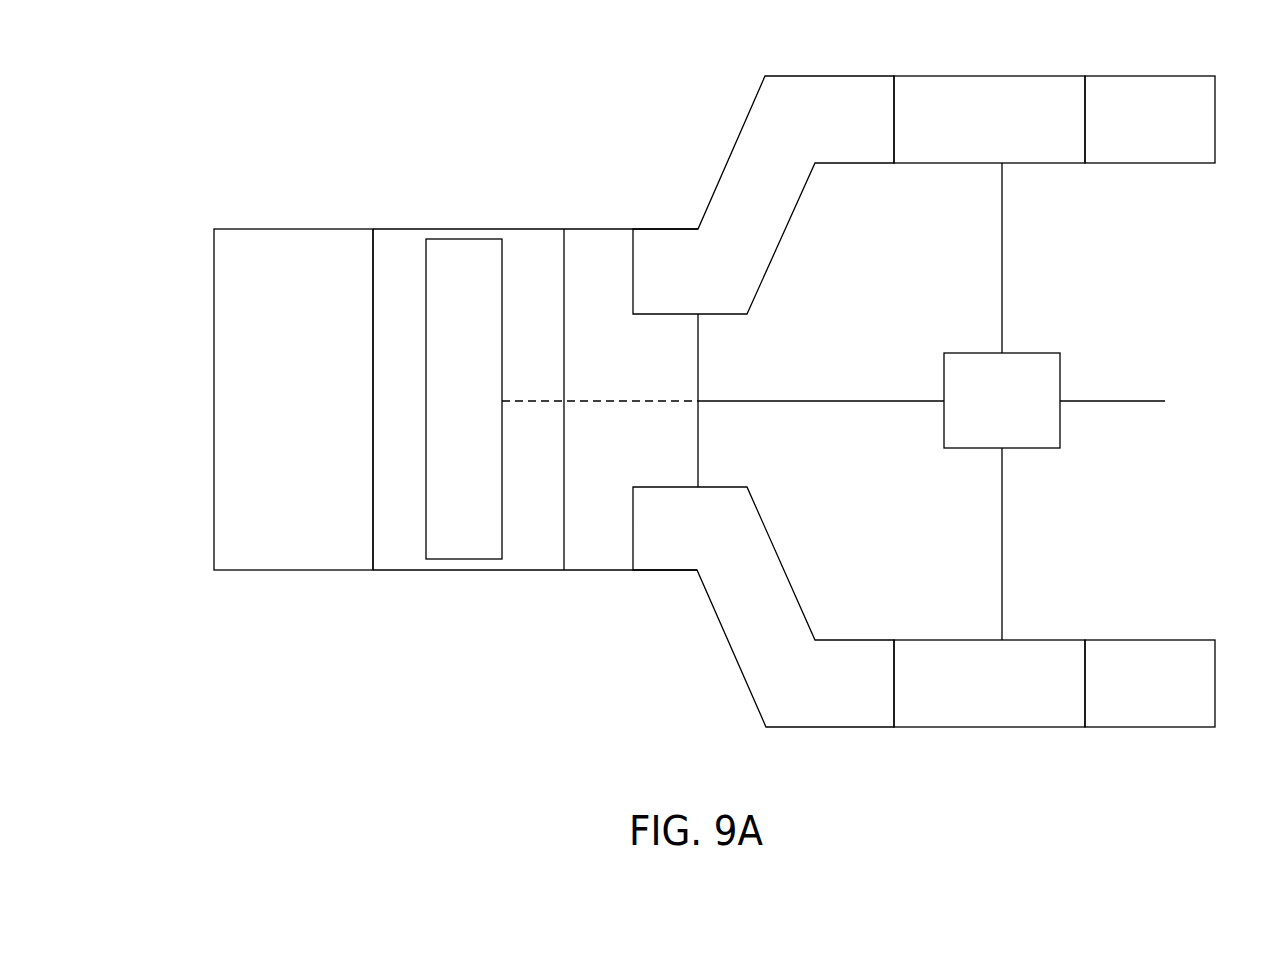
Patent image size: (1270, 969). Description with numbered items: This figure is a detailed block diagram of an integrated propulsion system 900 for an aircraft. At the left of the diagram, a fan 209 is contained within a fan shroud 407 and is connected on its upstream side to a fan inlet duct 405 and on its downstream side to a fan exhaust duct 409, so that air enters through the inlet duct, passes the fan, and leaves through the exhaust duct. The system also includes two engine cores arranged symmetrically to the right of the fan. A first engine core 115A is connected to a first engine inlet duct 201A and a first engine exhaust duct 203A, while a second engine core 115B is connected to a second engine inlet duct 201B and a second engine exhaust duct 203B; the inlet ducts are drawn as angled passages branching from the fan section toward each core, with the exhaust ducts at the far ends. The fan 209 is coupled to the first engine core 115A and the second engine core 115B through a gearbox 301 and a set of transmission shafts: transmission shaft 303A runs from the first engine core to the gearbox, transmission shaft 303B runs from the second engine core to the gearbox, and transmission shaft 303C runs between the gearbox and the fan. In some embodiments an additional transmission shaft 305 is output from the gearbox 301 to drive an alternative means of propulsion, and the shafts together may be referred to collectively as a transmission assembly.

The integrated propulsion system 900 is at (258, 112).
The fan inlet duct 405 is at (273, 412).
The fan shroud 407 is at (395, 240).
The fan 209 is at (444, 412).
The fan exhaust duct 409 is at (597, 243).
The second engine inlet duct 201B is at (729, 193).
The first engine inlet duct 201A is at (731, 624).
The second engine core 115B is at (964, 128).
The second engine exhaust duct 203B is at (1126, 128).
The first engine core 115A is at (964, 698).
The first engine exhaust duct 203A is at (1126, 698).
The gearbox 301 is at (984, 412).
The transmission shaft 303B is at (1002, 255).
The transmission shaft 303A is at (1002, 543).
The transmission shaft 303C is at (822, 402).
The additional transmission shaft 305 is at (1118, 401).